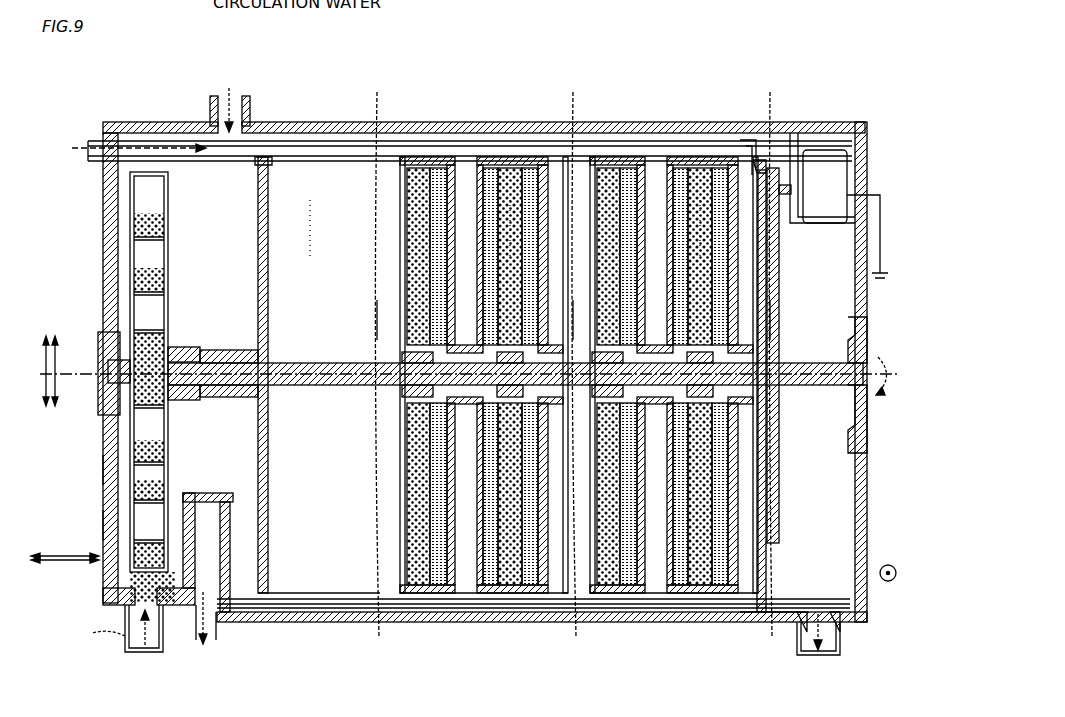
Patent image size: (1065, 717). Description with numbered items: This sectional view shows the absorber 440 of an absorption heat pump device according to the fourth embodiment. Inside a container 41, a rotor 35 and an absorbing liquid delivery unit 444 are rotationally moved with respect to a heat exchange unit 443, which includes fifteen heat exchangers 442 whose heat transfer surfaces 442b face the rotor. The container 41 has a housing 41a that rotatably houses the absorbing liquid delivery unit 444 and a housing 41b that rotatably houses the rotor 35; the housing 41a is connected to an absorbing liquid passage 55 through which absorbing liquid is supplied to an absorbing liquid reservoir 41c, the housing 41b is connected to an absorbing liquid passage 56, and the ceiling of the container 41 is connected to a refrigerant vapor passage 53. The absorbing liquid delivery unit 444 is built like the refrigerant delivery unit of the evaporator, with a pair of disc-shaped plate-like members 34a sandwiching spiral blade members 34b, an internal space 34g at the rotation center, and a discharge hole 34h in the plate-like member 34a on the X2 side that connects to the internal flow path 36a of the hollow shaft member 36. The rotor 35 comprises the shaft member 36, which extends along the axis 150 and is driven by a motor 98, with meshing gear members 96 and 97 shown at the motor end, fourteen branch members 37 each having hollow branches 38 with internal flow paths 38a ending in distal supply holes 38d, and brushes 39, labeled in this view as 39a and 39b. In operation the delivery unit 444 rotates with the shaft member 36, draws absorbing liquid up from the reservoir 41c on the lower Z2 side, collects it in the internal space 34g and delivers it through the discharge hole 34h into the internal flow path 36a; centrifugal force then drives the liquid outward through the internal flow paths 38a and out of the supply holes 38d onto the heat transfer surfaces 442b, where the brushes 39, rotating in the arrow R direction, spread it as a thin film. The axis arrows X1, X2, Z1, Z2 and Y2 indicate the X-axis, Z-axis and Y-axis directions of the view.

The absorber 440 is at (37, 114).
The container 41 is at (866, 140).
The housing 41a is at (103, 480).
The housing 41b is at (775, 612).
The absorbing liquid reservoir 41c is at (103, 527).
The refrigerant vapor passage 53 is at (212, 100).
The absorbing liquid delivery unit 444 is at (182, 213).
The rotor 35 is at (240, 278).
The plate-like member 34a is at (168, 278).
The blade member 34b is at (160, 322).
The discharge hole 34h is at (190, 347).
The internal space 34g is at (200, 396).
The shaft member 36 is at (815, 365).
The internal flow path 36a is at (232, 358).
The heat exchanger 442 is at (268, 156).
The heat transfer surface 442b is at (232, 528).
The absorbing liquid passage 55 is at (165, 641).
The partition plate 39a is at (377, 110).
The brush 39 is at (585, 203).
The branch 38 is at (318, 168).
The branch member 37 is at (511, 163).
The internal flow path 38a is at (345, 165).
The heat transfer wall 39b is at (296, 165).
The supply hole 38d is at (303, 596).
The gear member 96 is at (787, 280).
The gear member 97 is at (786, 226).
The heat exchange unit 443 is at (780, 145).
The motor 98 is at (824, 150).
The axis 150 is at (843, 360).
The arrow R direction R is at (889, 383).
The Y axis direction Y2 is at (889, 587).
The absorbing liquid passage 56 is at (842, 644).
The Z axis direction Z1 is at (58, 371).
The Z2 side Z2 is at (40, 371).
The X1 side X1 is at (65, 561).
The X2 side X2 is at (65, 549).